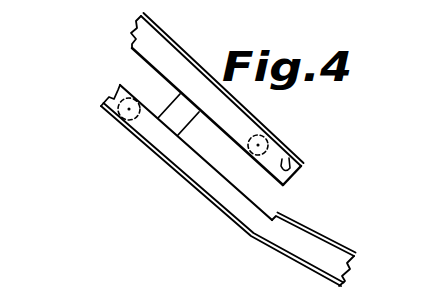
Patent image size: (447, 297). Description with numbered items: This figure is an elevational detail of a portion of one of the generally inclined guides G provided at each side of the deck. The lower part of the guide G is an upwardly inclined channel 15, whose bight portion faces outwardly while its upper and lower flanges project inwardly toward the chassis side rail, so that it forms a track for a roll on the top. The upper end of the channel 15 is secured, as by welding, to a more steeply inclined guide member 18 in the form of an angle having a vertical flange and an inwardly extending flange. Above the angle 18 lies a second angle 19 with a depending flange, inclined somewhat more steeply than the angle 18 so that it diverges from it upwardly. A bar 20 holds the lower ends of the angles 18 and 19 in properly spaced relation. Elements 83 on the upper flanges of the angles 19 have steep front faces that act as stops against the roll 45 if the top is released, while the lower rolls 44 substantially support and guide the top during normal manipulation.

The second angle 19 is at (192, 43).
The bar 20 is at (171, 108).
The guide member 18 is at (148, 135).
The upwardly inclined channel 15 is at (312, 233).
The roll 44 is at (104, 93).
The roll 45 is at (273, 110).
The element 83 is at (130, 28).
The guide G is at (188, 188).